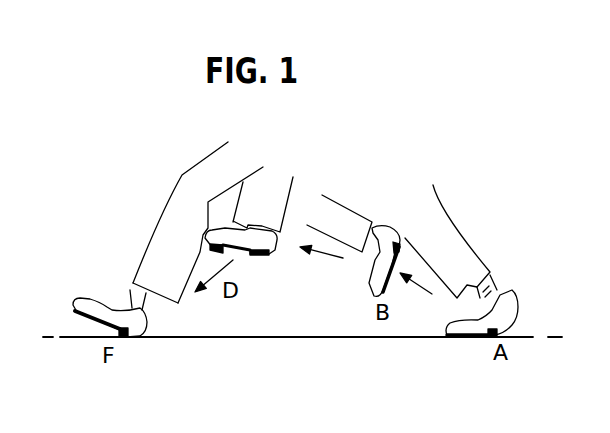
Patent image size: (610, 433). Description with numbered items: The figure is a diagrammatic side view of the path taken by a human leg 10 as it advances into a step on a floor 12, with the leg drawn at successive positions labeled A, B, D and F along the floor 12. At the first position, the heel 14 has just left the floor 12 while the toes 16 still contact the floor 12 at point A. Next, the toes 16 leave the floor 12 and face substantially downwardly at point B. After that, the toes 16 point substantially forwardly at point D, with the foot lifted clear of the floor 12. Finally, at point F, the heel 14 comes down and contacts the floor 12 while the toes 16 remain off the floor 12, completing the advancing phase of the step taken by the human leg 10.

The human leg 10 is at (460, 235).
The floor 12 is at (355, 337).
The heel 14 is at (142, 338).
The toes 16 is at (223, 228).